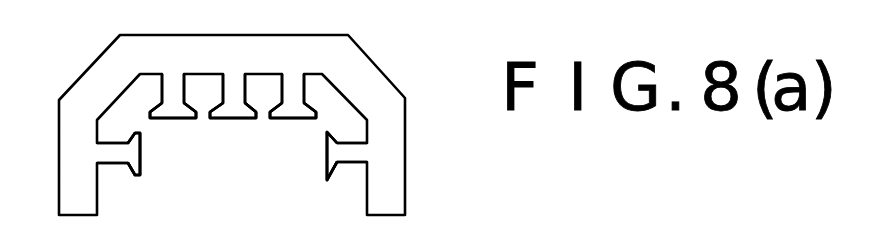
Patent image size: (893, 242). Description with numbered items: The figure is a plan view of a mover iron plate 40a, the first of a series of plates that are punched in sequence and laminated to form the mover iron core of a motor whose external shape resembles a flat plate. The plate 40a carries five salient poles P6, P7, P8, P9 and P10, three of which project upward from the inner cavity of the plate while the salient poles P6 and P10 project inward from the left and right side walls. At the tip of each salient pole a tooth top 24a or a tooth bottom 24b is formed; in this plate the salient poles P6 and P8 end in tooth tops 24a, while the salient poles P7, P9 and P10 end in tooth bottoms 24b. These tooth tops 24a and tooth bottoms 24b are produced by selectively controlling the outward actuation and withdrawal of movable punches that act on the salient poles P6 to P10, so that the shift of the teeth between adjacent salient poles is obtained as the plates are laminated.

The mover iron plate 40a is at (365, 80).
The salient pole P6 is at (113, 152).
The salient pole P7 is at (177, 97).
The salient pole P8 is at (233, 97).
The salient pole P9 is at (291, 95).
The salient pole P10 is at (357, 153).
The tooth top 24a is at (235, 119).
The tooth bottom 24b is at (177, 119).